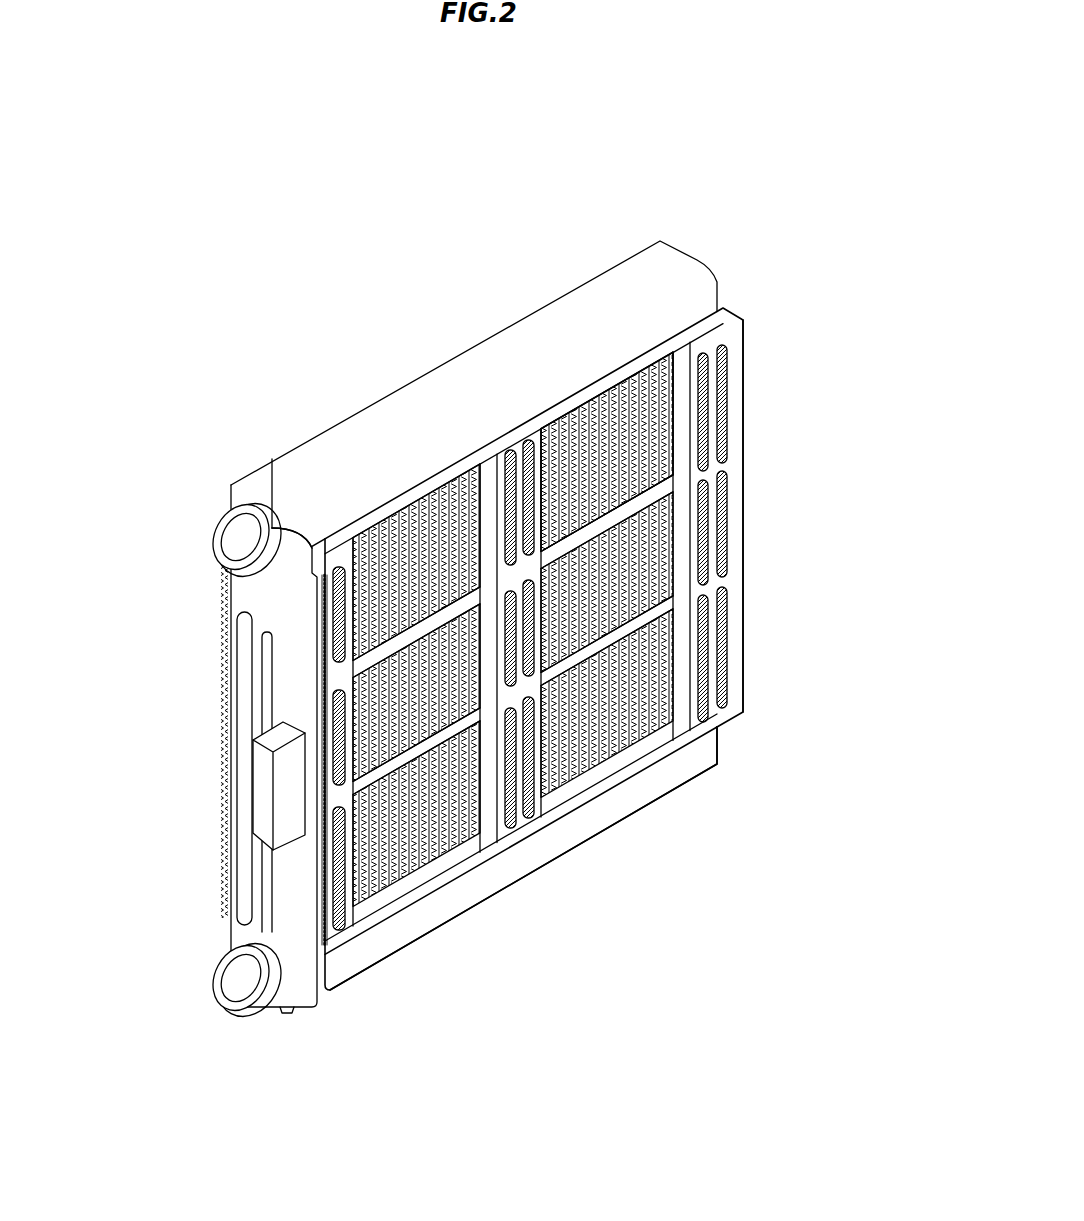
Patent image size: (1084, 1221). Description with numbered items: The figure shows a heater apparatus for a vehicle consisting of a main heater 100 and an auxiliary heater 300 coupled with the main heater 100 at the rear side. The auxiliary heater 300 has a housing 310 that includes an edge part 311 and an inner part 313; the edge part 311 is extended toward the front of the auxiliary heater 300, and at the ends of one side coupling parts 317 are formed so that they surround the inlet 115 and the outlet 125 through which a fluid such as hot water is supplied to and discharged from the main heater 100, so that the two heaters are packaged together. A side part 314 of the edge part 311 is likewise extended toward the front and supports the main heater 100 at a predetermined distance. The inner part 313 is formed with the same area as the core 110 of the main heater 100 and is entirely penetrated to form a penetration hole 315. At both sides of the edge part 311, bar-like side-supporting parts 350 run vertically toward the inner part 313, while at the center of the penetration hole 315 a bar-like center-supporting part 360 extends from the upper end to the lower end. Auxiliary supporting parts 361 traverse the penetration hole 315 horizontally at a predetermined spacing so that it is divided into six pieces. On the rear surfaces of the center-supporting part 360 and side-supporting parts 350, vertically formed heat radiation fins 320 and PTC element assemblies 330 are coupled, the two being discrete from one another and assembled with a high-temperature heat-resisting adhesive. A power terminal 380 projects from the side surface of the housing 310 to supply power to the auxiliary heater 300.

The main heater 100 is at (190, 634).
The core 110 is at (602, 762).
The inlet 115 is at (243, 538).
The outlet 125 is at (247, 982).
The auxiliary heater 300 is at (764, 690).
The housing 310 is at (783, 170).
The edge part 311 is at (738, 370).
The inner part 313 is at (598, 420).
The penetration hole 315 is at (607, 452).
The side part 314 is at (283, 605).
The coupling part 317 is at (282, 518).
The heat radiation fins 320 is at (733, 522).
The PTC element assembly 330 is at (738, 633).
The side-supporting part 350 is at (680, 703).
The center-supporting part 360 is at (478, 500).
The auxiliary supporting part 361 is at (655, 497).
The power terminal 380 is at (262, 805).